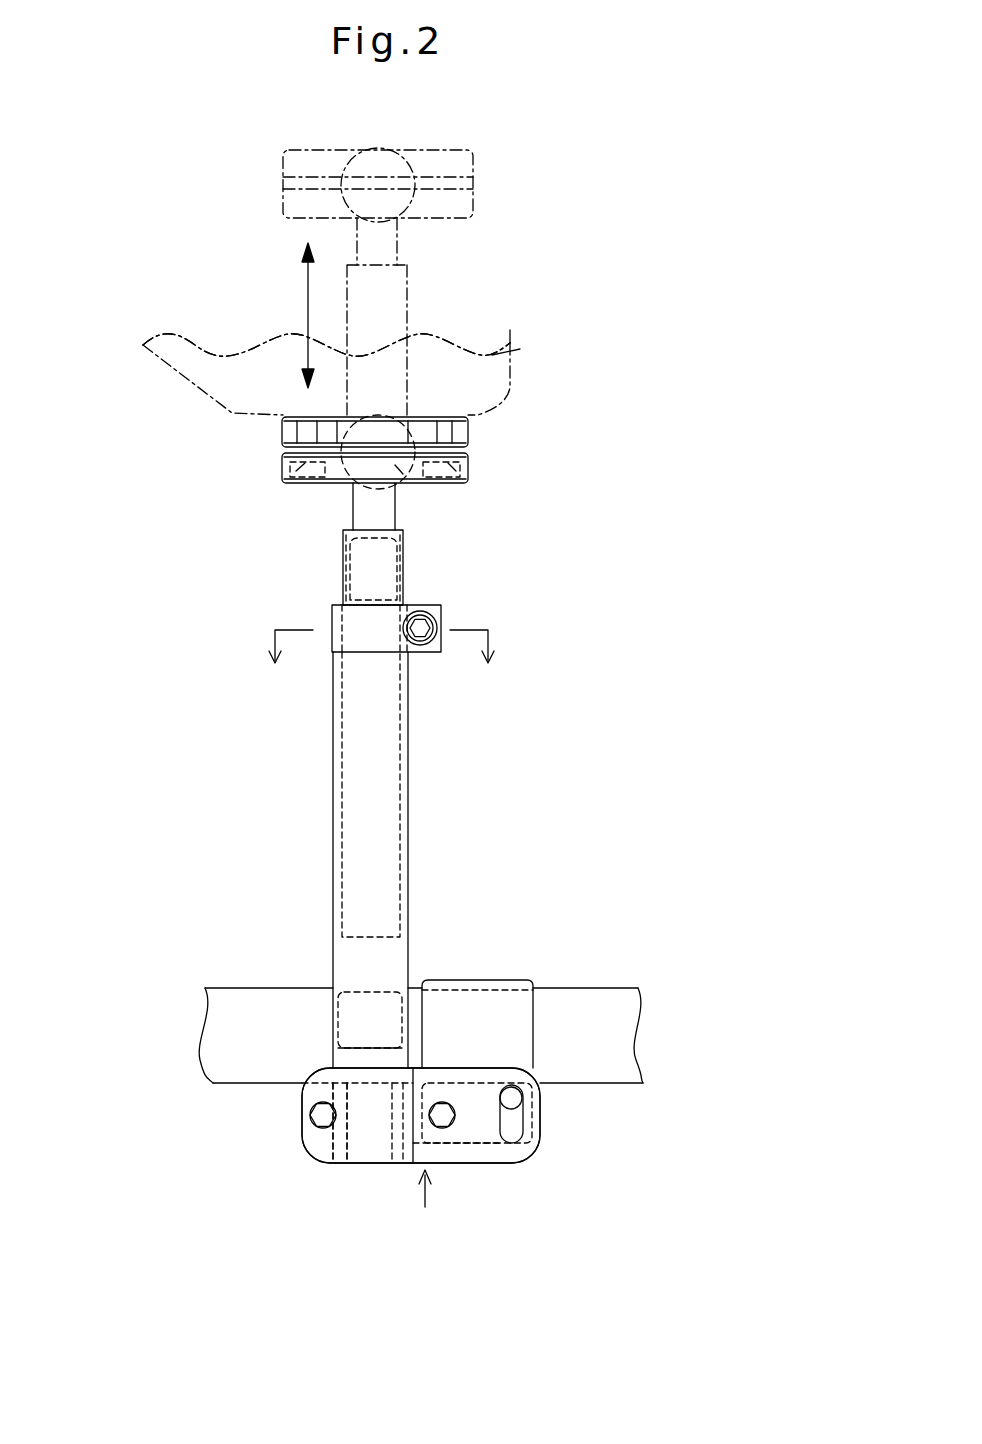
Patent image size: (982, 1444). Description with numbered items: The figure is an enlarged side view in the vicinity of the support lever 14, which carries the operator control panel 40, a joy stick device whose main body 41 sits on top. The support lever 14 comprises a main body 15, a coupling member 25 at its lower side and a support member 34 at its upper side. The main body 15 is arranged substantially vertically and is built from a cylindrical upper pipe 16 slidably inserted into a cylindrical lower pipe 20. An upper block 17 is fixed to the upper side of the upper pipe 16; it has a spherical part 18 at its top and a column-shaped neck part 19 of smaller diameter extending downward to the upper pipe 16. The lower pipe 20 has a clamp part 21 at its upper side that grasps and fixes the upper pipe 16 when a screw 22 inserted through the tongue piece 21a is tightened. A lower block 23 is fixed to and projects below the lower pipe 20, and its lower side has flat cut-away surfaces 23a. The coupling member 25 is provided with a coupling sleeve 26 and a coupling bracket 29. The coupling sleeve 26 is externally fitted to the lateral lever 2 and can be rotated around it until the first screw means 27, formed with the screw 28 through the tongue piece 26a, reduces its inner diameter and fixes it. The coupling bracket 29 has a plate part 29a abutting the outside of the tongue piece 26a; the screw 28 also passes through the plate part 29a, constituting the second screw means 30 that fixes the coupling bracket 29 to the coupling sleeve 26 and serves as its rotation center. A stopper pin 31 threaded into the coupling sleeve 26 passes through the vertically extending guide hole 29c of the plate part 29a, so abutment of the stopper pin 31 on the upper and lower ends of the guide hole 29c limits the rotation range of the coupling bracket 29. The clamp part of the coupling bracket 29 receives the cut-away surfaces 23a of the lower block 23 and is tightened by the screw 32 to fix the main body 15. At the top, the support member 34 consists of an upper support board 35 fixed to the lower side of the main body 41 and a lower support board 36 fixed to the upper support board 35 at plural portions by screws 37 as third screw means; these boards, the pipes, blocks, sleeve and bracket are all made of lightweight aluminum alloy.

The lateral lever 2 is at (242, 1010).
The support lever 14 is at (643, 510).
The main body 15 is at (143, 597).
The upper pipe 16 is at (395, 290).
The upper block 17 is at (560, 510).
The spherical part 18 is at (400, 473).
The neck part 19 is at (383, 520).
The lower pipe 20 is at (333, 798).
The clamp part 21 is at (423, 665).
The tongue piece 21a is at (435, 645).
The screw 22 is at (425, 628).
The lower block 23 is at (355, 980).
The cut-away surface 23a is at (363, 1147).
The coupling member 25 is at (462, 1197).
The coupling sleeve 26 is at (498, 982).
The tongue piece 26a is at (540, 1107).
The first screw means 27 is at (437, 1085).
The screw 28 is at (447, 1103).
The coupling bracket 29 is at (517, 1150).
The plate part 29a is at (421, 1115).
The guide hole 29c is at (508, 1122).
The second screw means 30 is at (460, 1130).
The stopper pin 31 is at (512, 1090).
The screw 32 is at (323, 1115).
The support member 34 is at (522, 213).
The upper support board 35 is at (468, 432).
The lower support board 36 is at (468, 470).
The screw 37 is at (445, 468).
The operator control panel 40 is at (497, 352).
The main body 41 is at (326, 345).